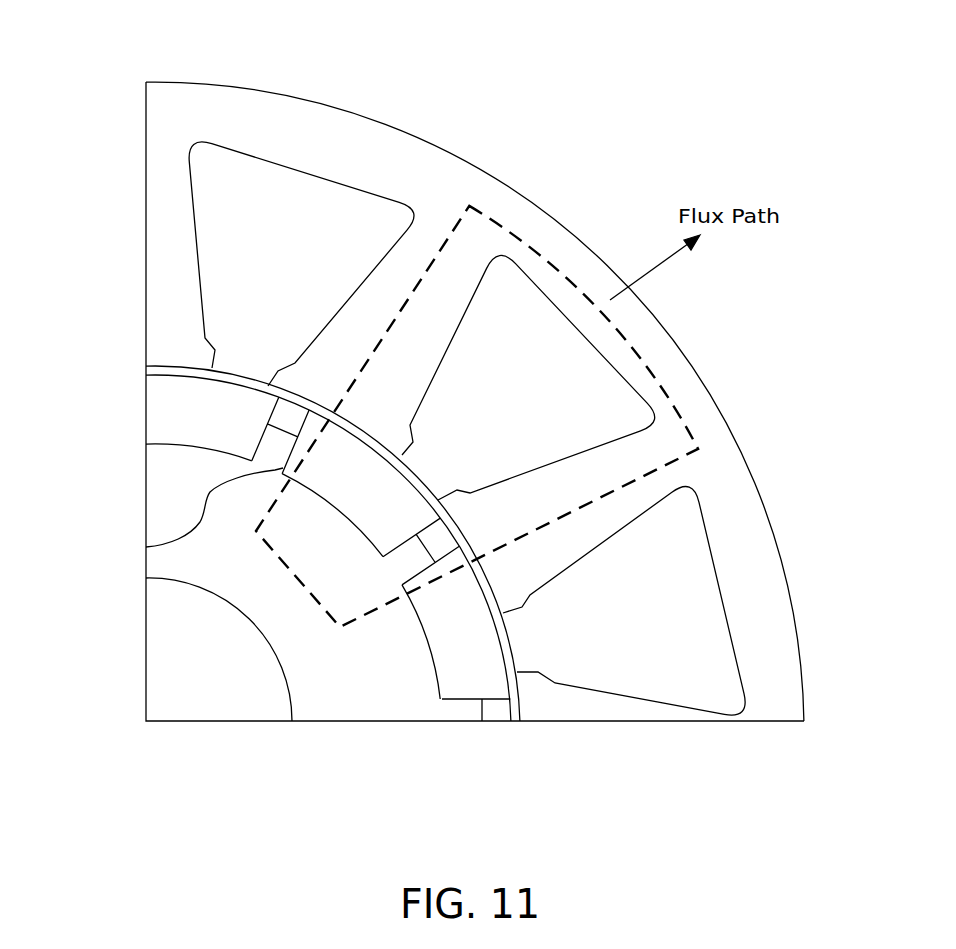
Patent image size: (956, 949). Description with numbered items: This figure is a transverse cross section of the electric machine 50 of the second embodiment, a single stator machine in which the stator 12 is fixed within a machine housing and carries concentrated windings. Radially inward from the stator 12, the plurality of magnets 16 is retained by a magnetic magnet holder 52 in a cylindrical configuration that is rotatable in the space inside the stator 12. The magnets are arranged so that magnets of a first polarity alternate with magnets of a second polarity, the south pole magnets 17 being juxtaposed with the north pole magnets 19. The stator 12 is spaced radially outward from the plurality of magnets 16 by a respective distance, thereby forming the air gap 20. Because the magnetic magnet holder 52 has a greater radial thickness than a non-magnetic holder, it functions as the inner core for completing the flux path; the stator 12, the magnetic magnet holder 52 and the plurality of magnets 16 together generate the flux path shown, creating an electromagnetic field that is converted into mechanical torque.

The electric machine 50 is at (646, 115).
The stator 12 is at (701, 402).
The plurality of magnets 16 is at (469, 688).
The south pole magnets 17 is at (193, 418).
The north pole magnets 19 is at (146, 547).
The air gap 20 is at (516, 713).
The magnetic magnet holder 52 is at (383, 710).